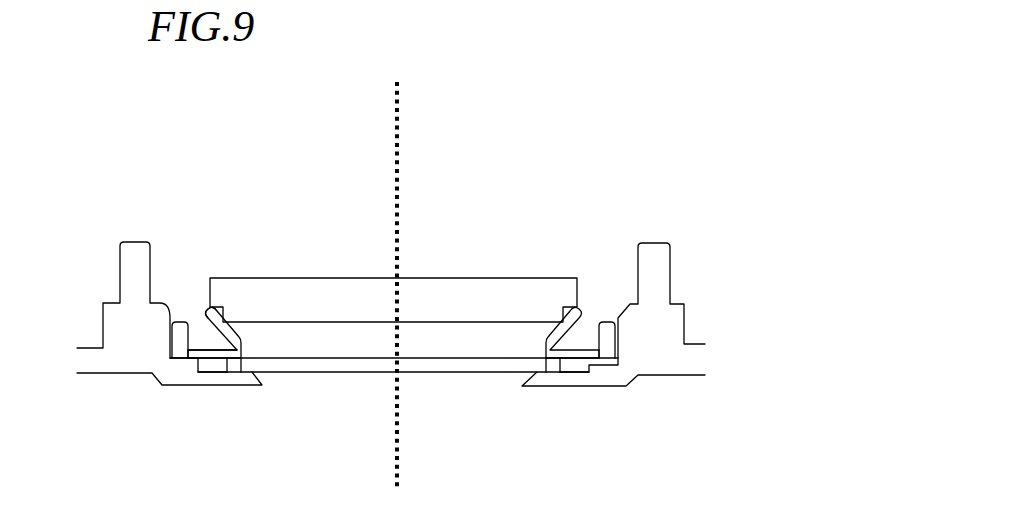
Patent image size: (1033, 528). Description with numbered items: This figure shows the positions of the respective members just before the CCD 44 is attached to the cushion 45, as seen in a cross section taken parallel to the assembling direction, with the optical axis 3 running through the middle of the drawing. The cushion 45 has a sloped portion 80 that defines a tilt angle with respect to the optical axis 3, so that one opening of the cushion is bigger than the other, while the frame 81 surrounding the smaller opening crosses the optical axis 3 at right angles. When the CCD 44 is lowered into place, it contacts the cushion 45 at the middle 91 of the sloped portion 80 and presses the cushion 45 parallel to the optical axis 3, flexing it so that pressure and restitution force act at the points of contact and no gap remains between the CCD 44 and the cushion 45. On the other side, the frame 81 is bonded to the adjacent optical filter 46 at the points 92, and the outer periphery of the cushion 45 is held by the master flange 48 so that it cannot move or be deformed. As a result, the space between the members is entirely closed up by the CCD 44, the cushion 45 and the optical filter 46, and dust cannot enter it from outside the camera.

The optical axis 3 is at (397, 123).
The CCD 44 is at (492, 297).
The cushion 45 is at (185, 350).
The optical filter 46 is at (492, 363).
The master flange 48 is at (650, 253).
The sloped portion 80 is at (245, 333).
The frame 81 is at (207, 357).
The middle of the sloped portion 91 is at (232, 313).
The points 92 is at (241, 358).